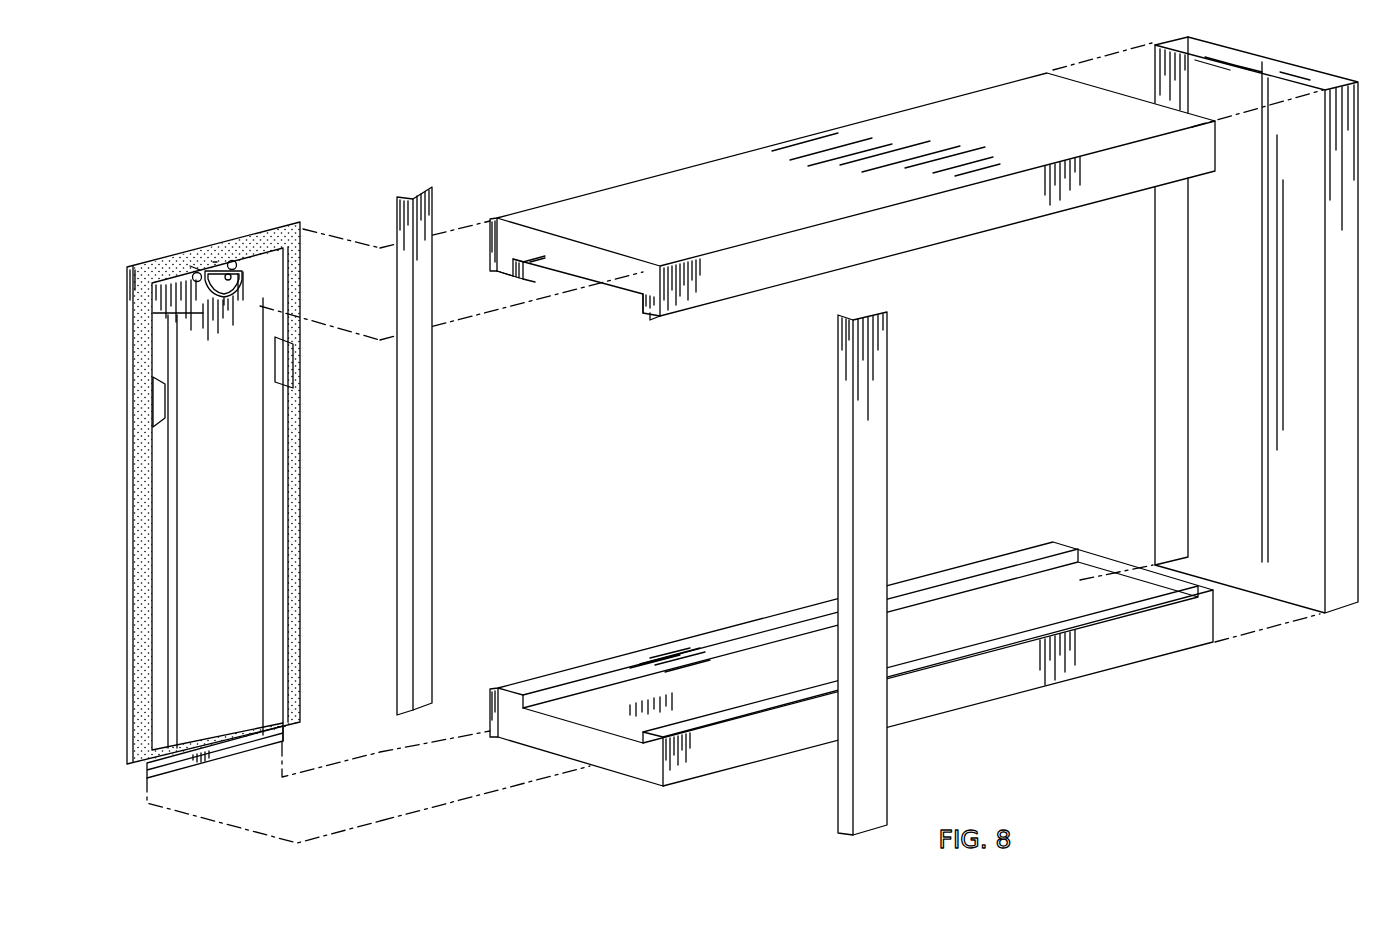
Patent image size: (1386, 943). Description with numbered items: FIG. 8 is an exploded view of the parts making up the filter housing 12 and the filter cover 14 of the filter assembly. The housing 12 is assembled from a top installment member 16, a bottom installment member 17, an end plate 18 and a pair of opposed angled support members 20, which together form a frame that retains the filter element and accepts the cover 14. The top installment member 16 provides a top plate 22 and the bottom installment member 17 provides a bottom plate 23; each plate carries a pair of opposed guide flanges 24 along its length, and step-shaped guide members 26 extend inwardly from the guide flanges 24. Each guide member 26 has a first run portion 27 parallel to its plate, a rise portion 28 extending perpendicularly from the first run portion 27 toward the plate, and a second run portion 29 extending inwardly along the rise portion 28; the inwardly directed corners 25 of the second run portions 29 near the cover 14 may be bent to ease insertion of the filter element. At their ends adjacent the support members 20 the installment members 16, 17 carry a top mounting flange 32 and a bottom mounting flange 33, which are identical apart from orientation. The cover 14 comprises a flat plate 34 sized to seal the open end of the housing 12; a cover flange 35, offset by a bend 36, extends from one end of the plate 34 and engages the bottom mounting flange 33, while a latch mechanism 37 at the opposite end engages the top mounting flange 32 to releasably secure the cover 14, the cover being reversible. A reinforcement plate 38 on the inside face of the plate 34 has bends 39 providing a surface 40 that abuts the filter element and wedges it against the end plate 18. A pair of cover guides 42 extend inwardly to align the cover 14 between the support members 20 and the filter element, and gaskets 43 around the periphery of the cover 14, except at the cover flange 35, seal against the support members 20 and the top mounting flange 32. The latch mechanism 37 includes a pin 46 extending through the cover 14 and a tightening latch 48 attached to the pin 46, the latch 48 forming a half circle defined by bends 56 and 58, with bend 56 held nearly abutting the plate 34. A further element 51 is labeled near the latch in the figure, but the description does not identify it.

The filter housing 12 is at (877, 436).
The filter cover 14 is at (233, 474).
The top installment member 16 is at (826, 426).
The bottom installment member 17 is at (851, 669).
The end plate 18 is at (1200, 445).
The angled support members 20 is at (418, 486).
The top plate 22 is at (733, 170).
The bottom plate 23 is at (930, 640).
The guide flanges 24 is at (493, 255).
The inwardly directed corners 25 is at (540, 260).
The guide members 26 is at (497, 283).
The first run portion 27 is at (508, 280).
The rise portion 28 is at (518, 279).
The second run portion 29 is at (537, 260).
The top mounting flange 32 is at (623, 250).
The bottom mounting flange 33 is at (563, 750).
The flat plate 34 is at (273, 262).
The cover flange 35 is at (177, 763).
The bend 36 is at (238, 740).
The latch mechanism 37 is at (215, 258).
The reinforcement plate 38 is at (252, 500).
The bends 39 is at (263, 462).
The surface 40 is at (240, 537).
The cover guides 42 is at (293, 370).
The gaskets 43 is at (270, 235).
The pin 46 is at (232, 263).
The tightening latch 48 is at (224, 300).
The fastener 51 is at (200, 275).
The bend 56 is at (207, 270).
The bend 58 is at (257, 287).